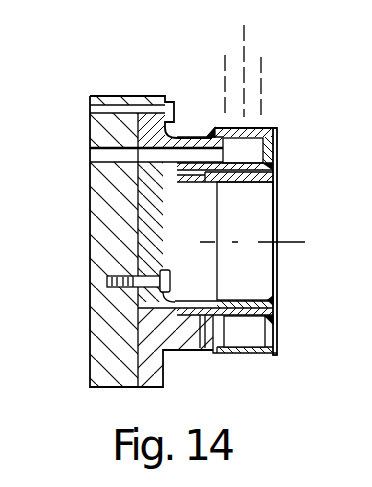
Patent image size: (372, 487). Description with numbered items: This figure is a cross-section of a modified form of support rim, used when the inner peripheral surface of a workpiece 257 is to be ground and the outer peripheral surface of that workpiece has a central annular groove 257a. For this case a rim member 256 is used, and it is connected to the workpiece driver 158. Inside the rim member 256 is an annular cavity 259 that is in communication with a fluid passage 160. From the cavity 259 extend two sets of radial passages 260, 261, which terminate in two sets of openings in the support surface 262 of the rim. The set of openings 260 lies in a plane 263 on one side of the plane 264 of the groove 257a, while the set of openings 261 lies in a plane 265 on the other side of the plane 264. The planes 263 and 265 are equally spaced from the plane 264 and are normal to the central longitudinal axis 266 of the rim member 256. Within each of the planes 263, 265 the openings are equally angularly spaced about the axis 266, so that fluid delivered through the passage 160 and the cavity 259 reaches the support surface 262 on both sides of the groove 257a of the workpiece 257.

The workpiece driver 158 is at (91, 193).
The fluid passage 160 is at (92, 149).
The rim member 256 is at (278, 127).
The workpiece 257 is at (274, 182).
The central annular groove 257a is at (245, 176).
The annular cavity 259 is at (258, 149).
The radial passages 260 is at (274, 335).
The radial passages 261 is at (248, 332).
The support surface 262 is at (272, 301).
The plane 263 is at (262, 70).
The plane 264 is at (246, 29).
The plane 265 is at (225, 72).
The central longitudinal axis 266 is at (285, 241).